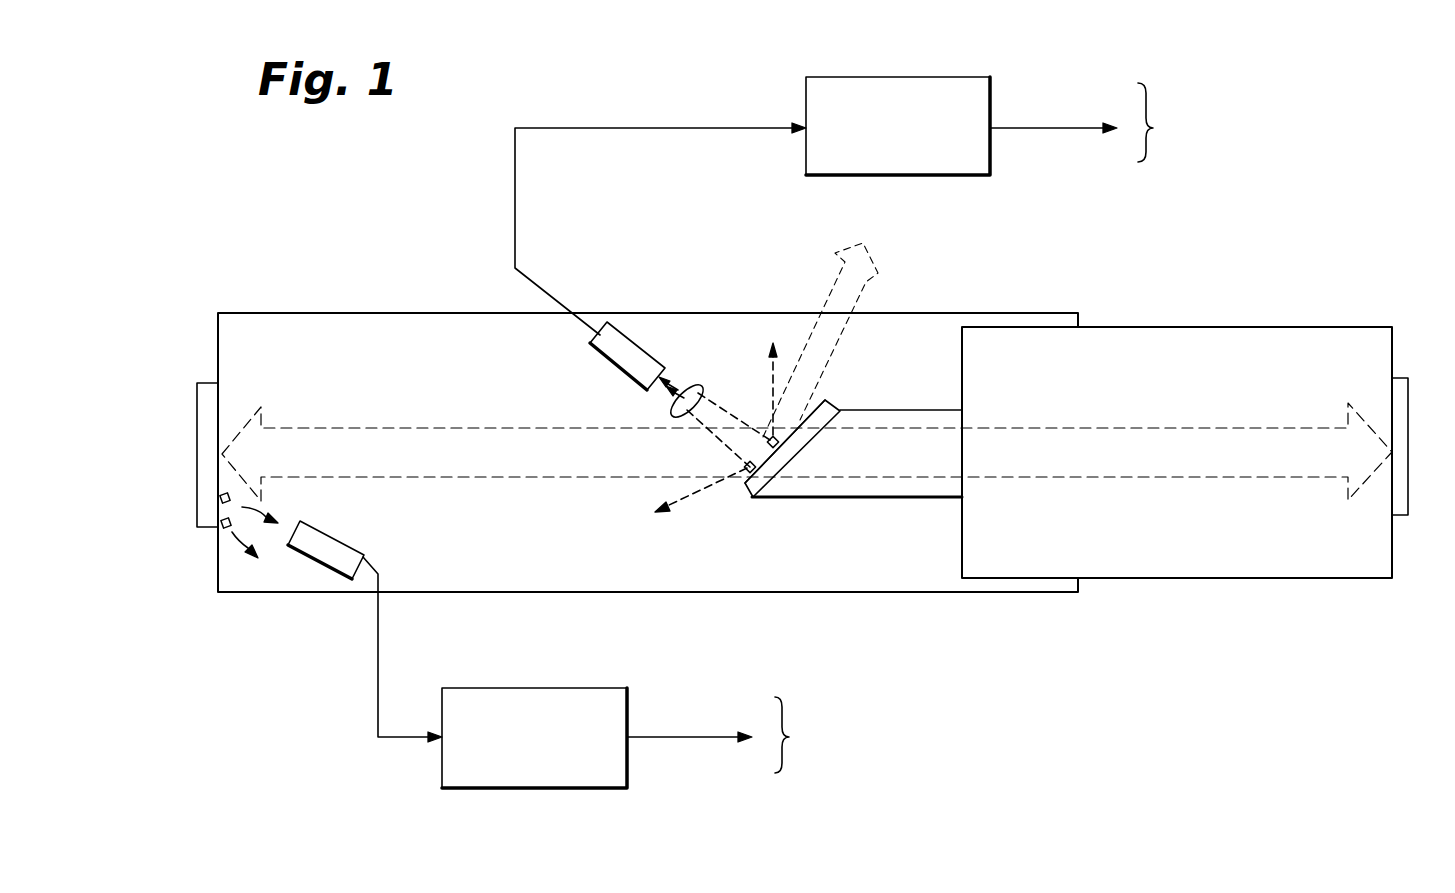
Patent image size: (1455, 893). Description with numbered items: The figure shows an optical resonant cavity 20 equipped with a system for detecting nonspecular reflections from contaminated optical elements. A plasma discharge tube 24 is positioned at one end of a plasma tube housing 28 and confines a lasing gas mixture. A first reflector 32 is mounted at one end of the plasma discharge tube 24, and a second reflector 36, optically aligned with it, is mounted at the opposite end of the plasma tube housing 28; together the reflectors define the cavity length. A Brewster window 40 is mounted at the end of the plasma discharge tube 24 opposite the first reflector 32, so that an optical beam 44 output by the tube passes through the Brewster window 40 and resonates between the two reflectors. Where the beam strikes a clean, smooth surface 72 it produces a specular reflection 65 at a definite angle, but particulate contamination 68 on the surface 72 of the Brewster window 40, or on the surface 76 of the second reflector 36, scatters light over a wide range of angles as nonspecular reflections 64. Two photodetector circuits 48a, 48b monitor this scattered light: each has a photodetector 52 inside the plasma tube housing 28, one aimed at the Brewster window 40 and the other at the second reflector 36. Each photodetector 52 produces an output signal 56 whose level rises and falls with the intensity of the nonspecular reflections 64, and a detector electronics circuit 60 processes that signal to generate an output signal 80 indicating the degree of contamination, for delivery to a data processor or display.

The optical resonant cavity 20 is at (1030, 240).
The plasma discharge tube 24 is at (1272, 327).
The plasma tube housing 28 is at (322, 312).
The first reflector 32 is at (1409, 500).
The second reflector 36 is at (196, 397).
The Brewster window 40 is at (832, 404).
The optical beam 44 is at (394, 432).
The photodetector circuit 48a is at (1171, 122).
The photodetector circuit 48b is at (807, 735).
The photodetector 52 is at (612, 350).
The output signal 56 is at (661, 126).
The detector electronics circuit 60 is at (945, 77).
The nonspecular reflections 64 is at (770, 390).
The specular reflection 65 is at (873, 256).
The particulate contamination 68 is at (221, 497).
The surface of Brewster window 72 is at (818, 405).
The surface of reflector 76 is at (220, 410).
The output signal 80 is at (1044, 126).